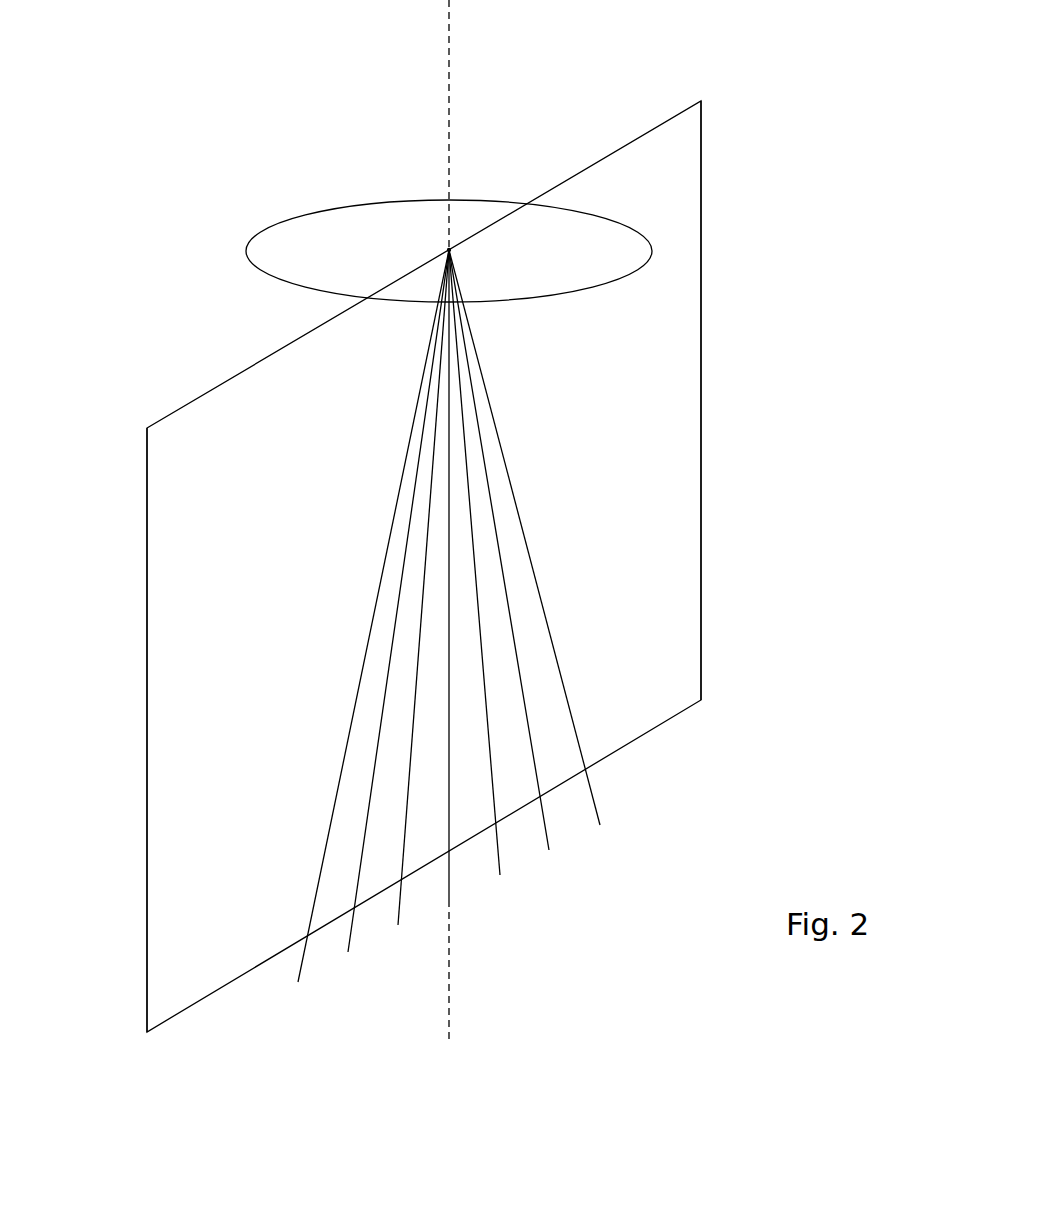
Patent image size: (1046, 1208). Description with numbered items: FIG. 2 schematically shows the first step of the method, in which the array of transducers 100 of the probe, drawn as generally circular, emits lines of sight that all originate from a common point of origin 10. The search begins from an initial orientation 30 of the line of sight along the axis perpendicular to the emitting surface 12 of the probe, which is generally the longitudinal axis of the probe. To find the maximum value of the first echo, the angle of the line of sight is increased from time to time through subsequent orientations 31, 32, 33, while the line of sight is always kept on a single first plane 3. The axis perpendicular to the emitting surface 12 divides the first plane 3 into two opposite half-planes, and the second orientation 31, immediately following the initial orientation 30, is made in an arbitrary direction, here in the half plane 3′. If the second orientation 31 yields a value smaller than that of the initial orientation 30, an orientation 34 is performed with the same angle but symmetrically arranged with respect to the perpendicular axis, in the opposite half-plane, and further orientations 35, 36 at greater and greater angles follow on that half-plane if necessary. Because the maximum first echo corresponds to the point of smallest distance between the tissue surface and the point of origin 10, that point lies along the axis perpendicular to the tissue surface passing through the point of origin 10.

The array of transducers 100 is at (307, 213).
The point of origin of the lines of sight 10 is at (450, 240).
The emitting surface of the probe 12 is at (449, 72).
The first plane 3 is at (690, 101).
The half-plane 3′ is at (702, 212).
The initial orientation of the line of sight 30 is at (450, 872).
The second orientation of the line of sight 31 is at (498, 850).
The subsequent orientation of the line of sight 32 is at (547, 823).
The subsequent orientation of the line of sight 33 is at (597, 800).
The symmetrical orientation of the line of sight 34 is at (397, 912).
The further orientation of the line of sight 35 is at (347, 933).
The further orientation of the line of sight 36 is at (298, 962).